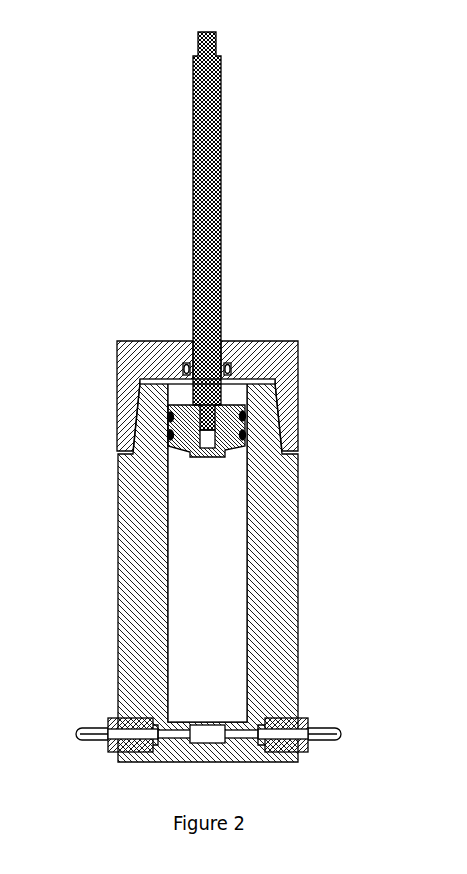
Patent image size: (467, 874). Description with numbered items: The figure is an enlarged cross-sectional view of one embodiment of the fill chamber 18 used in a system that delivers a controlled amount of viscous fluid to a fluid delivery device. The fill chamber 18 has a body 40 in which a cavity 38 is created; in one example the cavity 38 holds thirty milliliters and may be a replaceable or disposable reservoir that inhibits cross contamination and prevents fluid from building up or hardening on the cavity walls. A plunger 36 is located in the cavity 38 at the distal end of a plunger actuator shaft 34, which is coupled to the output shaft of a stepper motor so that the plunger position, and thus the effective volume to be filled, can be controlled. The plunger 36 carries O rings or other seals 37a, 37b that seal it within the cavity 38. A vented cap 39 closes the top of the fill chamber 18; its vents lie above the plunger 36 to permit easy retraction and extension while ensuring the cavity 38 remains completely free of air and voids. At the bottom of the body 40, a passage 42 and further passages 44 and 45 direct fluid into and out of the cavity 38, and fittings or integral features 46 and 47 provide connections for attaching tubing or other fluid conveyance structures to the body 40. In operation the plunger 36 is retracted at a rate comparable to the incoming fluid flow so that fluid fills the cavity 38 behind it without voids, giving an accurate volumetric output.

The fill chamber 18 is at (100, 378).
The plunger actuator shaft 34 is at (221, 258).
The plunger 36 is at (206, 452).
The O ring 37a is at (244, 415).
The O ring 37b is at (244, 433).
The cavity 38 is at (213, 565).
The vented cap 39 is at (298, 341).
The body 40 is at (297, 603).
The passage 42 is at (208, 735).
The passage 44 is at (172, 735).
The passage 45 is at (247, 735).
The fitting 46 is at (110, 718).
The fitting 47 is at (308, 718).